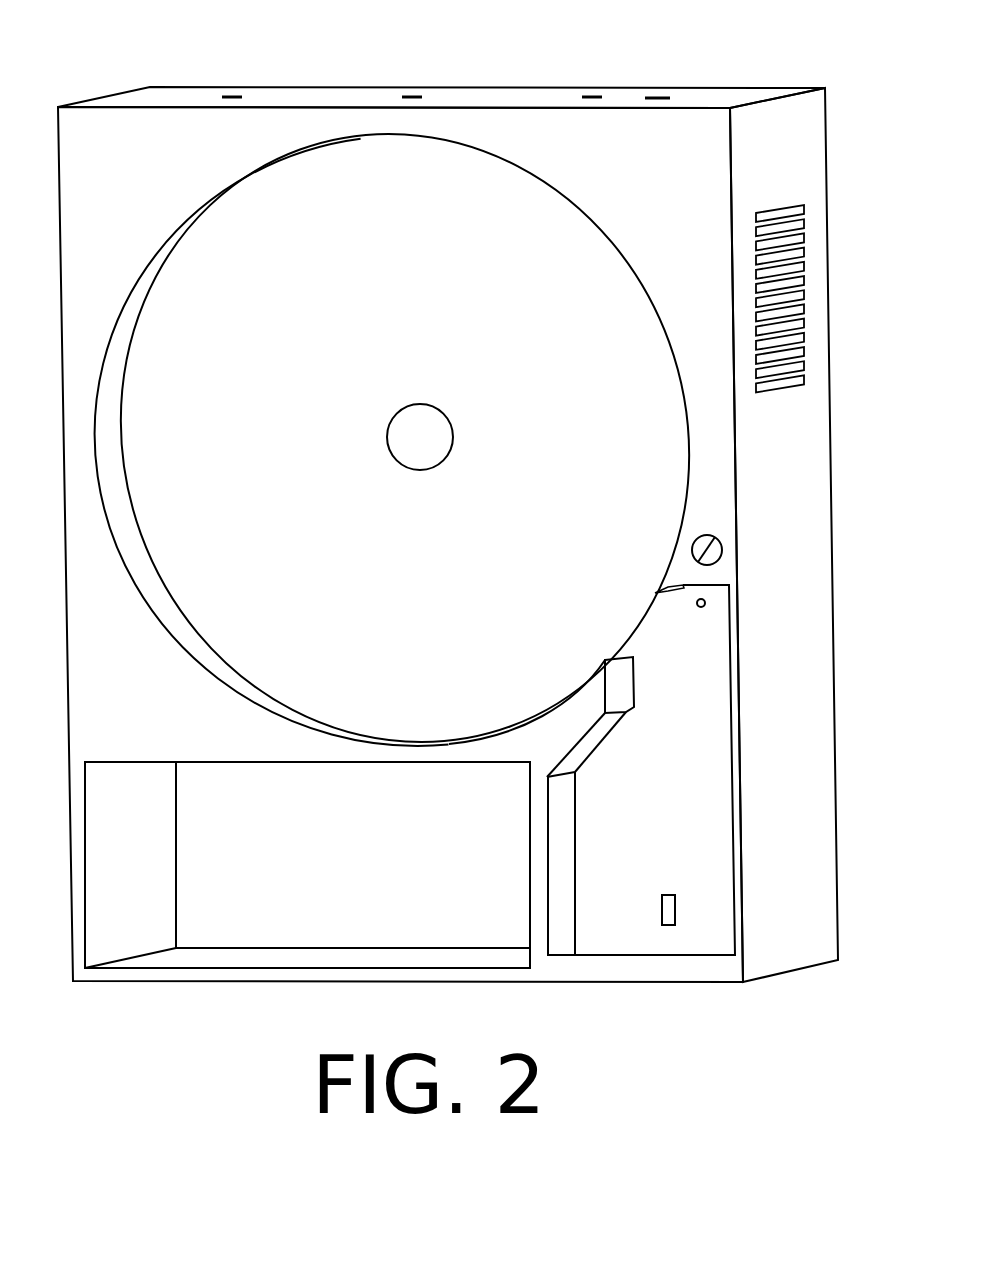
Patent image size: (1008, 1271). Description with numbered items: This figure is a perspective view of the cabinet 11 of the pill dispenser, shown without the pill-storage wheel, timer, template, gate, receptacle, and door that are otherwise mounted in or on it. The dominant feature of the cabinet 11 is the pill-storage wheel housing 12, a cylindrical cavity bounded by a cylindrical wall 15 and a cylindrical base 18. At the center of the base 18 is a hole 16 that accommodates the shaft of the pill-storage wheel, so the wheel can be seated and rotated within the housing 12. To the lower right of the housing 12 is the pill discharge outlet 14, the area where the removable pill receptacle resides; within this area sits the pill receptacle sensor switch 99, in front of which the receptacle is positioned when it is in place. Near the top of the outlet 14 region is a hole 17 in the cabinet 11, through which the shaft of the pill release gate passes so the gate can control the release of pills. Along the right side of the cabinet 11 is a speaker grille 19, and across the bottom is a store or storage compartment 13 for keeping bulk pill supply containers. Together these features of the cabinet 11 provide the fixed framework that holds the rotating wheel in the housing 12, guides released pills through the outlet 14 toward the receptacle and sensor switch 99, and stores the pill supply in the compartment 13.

The cabinet 11 is at (362, 95).
The pill-storage wheel housing 12 is at (530, 248).
The storage compartment 13 is at (252, 822).
The pill discharge outlet 14 is at (683, 710).
The cylindrical wall 15 is at (147, 587).
The hole 16 is at (418, 436).
The hole 17 is at (697, 607).
The cylindrical base 18 is at (434, 593).
The speaker grille 19 is at (805, 298).
The pill receptacle sensor switch 99 is at (665, 903).